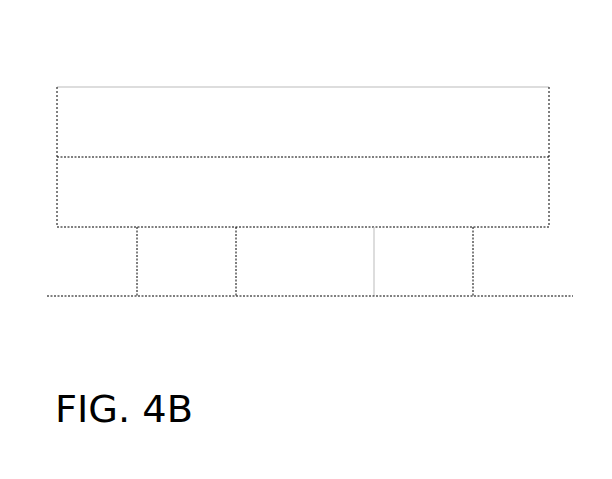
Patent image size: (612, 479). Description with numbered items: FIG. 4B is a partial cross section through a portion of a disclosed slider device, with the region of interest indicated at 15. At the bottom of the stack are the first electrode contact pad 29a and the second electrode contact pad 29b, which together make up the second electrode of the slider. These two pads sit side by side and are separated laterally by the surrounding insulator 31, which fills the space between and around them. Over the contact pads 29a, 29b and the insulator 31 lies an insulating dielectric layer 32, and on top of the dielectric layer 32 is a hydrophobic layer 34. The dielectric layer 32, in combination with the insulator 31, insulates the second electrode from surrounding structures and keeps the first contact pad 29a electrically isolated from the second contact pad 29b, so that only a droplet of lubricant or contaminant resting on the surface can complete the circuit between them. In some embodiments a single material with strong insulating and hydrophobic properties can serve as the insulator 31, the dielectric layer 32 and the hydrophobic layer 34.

The substrate stack 15 is at (303, 88).
The hydrophobic layer 34 is at (316, 133).
The insulating dielectric layer 32 is at (316, 203).
The first electrode contact pad 29a is at (206, 274).
The second electrode contact pad 29b is at (444, 274).
The insulator 31 is at (310, 272).